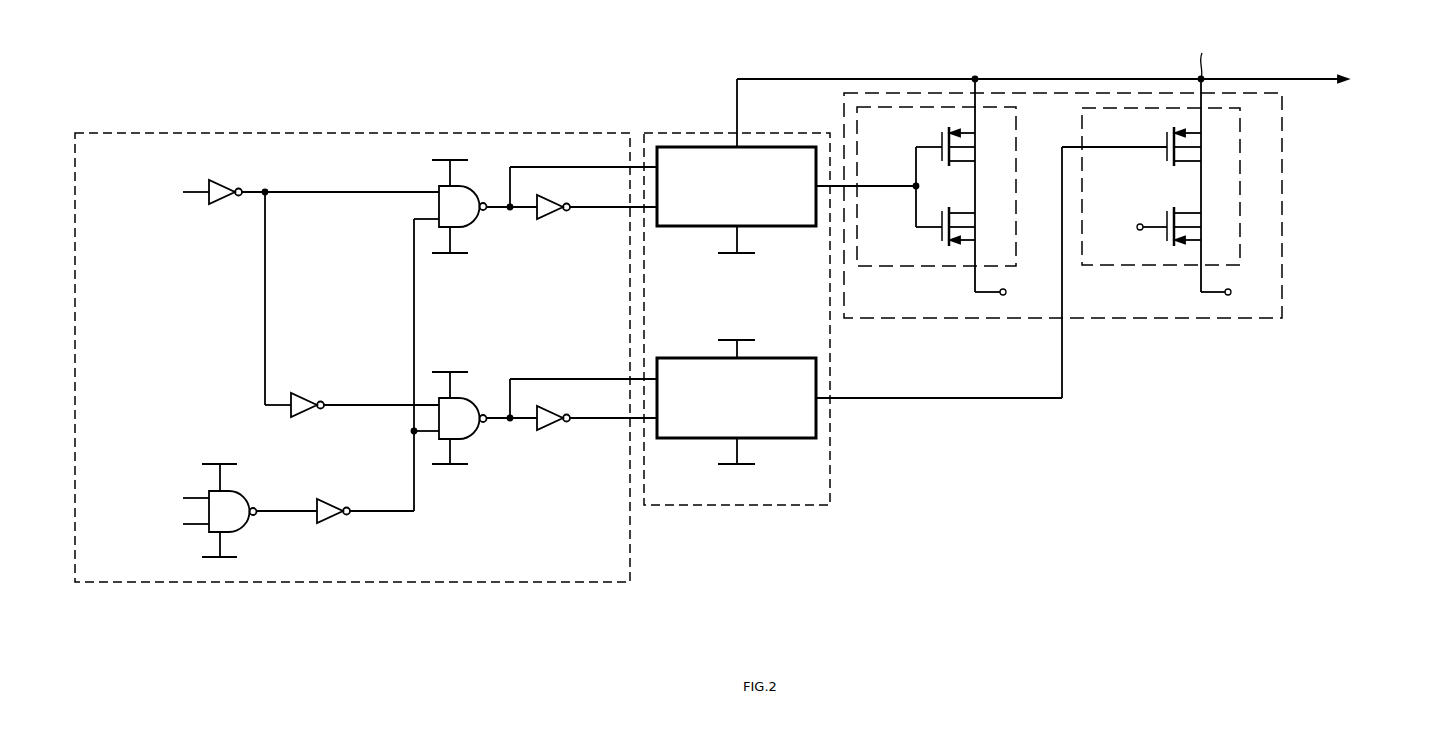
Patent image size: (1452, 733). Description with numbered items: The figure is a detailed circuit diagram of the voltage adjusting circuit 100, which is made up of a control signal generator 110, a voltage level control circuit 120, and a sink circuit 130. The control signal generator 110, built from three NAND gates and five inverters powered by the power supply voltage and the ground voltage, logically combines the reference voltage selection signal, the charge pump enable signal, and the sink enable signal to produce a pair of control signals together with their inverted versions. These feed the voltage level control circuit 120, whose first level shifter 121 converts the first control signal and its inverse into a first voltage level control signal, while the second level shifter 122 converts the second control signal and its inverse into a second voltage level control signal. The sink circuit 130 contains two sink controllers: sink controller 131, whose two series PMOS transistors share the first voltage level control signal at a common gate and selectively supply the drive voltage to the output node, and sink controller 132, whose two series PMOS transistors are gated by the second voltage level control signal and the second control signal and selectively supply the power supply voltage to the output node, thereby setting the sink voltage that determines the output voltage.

The voltage adjusting circuit 100 is at (168, 32).
The control signal generator 110 is at (331, 133).
The voltage level control circuit 120 is at (735, 507).
The level shifter 121 is at (671, 228).
The level shifter 122 is at (665, 356).
The sink circuit 130 is at (1225, 320).
The sink controller 131 is at (920, 268).
The sink controller 132 is at (1147, 267).